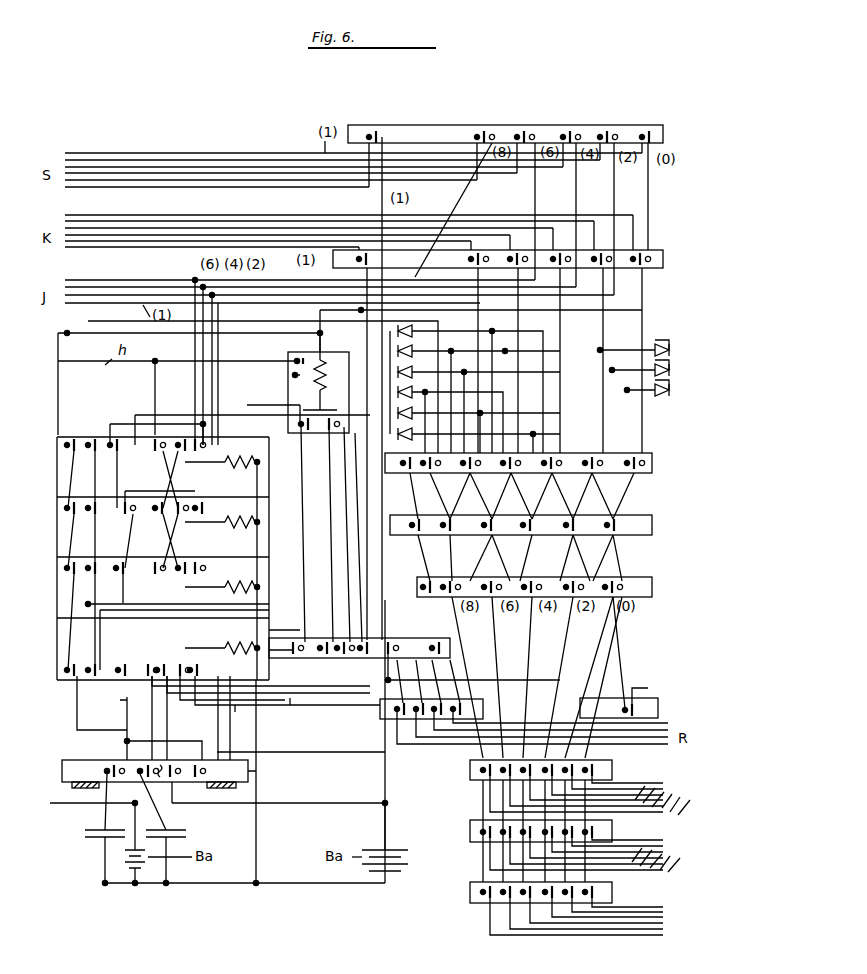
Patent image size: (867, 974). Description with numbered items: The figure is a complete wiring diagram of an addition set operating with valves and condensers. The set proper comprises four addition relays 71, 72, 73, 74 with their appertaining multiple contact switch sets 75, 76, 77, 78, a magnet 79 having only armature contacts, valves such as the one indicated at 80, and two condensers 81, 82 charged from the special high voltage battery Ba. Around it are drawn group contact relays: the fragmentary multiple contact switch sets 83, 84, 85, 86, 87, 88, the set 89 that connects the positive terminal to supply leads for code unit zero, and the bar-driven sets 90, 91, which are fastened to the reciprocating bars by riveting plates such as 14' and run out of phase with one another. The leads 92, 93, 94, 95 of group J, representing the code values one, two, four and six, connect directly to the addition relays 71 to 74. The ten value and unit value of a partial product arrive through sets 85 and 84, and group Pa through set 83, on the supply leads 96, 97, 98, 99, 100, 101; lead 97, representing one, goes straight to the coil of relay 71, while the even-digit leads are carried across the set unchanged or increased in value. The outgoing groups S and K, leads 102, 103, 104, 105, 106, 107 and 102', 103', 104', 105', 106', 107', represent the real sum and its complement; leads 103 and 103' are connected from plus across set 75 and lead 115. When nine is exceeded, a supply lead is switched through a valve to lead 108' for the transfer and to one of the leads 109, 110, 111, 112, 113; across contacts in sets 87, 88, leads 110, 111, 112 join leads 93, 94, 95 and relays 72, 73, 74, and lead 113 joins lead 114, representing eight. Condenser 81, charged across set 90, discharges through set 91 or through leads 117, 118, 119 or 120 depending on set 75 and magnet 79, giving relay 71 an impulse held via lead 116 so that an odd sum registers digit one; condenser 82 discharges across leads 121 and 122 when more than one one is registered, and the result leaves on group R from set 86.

The riveting plate 14' is at (65, 790).
The addition relay 71 is at (60, 644).
The addition relay 72 is at (60, 577).
The addition relay 73 is at (60, 521).
The addition relay 74 is at (60, 462).
The multiple contact switch set 75 is at (450, 649).
The multiple contact switch set 76 is at (645, 577).
The multiple contact switch set 77 is at (645, 515).
The multiple contact switch set 78 is at (645, 453).
The magnet 79 is at (288, 375).
The valve 80 is at (469, 389).
The condenser 81 is at (96, 827).
The condenser 82 is at (186, 827).
The multiple contact switch set 83 is at (470, 895).
The multiple contact switch set 84 is at (470, 834).
The multiple contact switch set 85 is at (470, 772).
The multiple contact switch set 86 is at (483, 707).
The multiple contact switch set 87 is at (658, 250).
The multiple contact switch set 88 is at (652, 125).
The multiple contact switch set 89 is at (658, 707).
The multiple contact switch set 90 is at (62, 770).
The multiple contact switch set 91 is at (258, 770).
The lead 92 is at (82, 303).
The lead 93 is at (112, 295).
The lead 94 is at (145, 287).
The lead 95 is at (176, 280).
The supply lead 96 is at (618, 639).
The supply lead 97 is at (353, 751).
The supply lead 98 is at (570, 627).
The supply lead 99 is at (532, 627).
The supply lead 100 is at (494, 627).
The supply lead 101 is at (457, 621).
The lead 102 is at (217, 156).
The lead 103 is at (271, 153).
The lead 104 is at (291, 149).
The lead 105 is at (314, 146).
The lead 106 is at (332, 143).
The lead 107 is at (353, 139).
The lead 102' is at (212, 220).
The lead 103' is at (268, 217).
The lead 104' is at (287, 214).
The lead 105' is at (309, 210).
The lead 106' is at (329, 207).
The lead 107' is at (349, 204).
The lead 108' is at (481, 369).
The lead 109 is at (661, 360).
The lead 110 is at (621, 360).
The lead 111 is at (579, 360).
The lead 112 is at (538, 360).
The lead 113 is at (498, 360).
The lead 114 is at (462, 195).
The lead 115 is at (386, 689).
The lead 116 is at (183, 726).
The lead 117 is at (293, 712).
The lead 118 is at (340, 511).
The lead 119 is at (348, 567).
The lead 120 is at (239, 715).
The lead 121 is at (155, 726).
The lead 122 is at (238, 415).